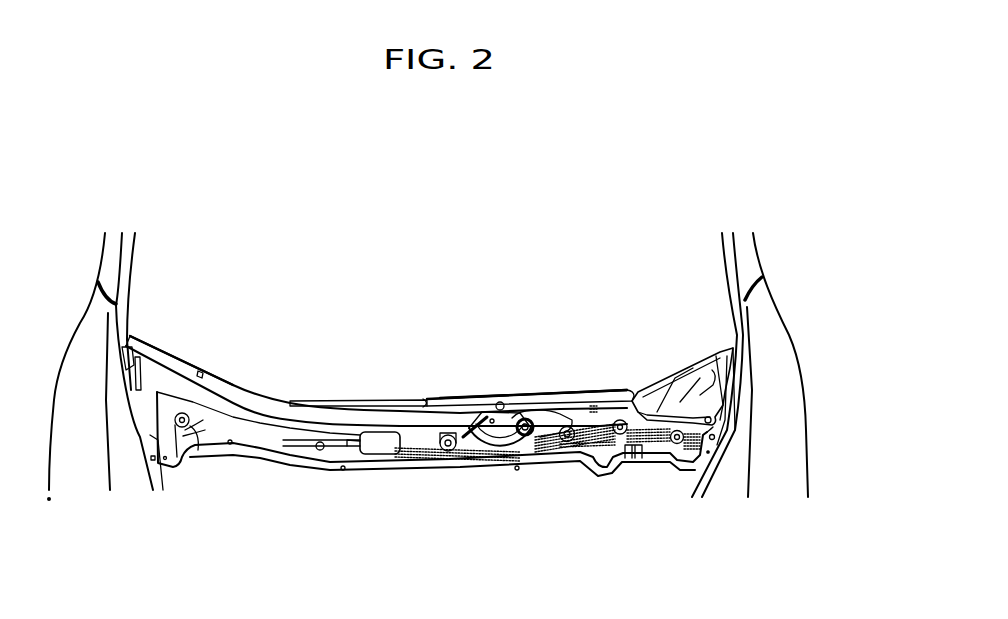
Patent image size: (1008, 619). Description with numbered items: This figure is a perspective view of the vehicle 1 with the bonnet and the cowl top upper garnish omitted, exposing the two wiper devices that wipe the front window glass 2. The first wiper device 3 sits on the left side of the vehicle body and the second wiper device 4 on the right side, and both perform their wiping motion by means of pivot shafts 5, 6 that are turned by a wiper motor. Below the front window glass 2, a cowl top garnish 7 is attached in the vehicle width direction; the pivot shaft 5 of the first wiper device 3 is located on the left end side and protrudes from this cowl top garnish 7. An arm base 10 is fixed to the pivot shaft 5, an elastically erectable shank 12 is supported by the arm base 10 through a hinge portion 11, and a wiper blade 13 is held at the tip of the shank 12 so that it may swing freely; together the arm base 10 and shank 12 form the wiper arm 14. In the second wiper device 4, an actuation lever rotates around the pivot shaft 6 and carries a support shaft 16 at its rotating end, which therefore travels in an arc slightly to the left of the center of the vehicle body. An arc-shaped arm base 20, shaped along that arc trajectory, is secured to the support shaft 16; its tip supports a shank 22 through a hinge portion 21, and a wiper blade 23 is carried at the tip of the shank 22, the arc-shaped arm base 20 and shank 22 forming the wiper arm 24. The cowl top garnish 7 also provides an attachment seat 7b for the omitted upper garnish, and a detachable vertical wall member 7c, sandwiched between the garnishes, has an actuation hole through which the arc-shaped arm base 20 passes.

The vehicle 1 is at (806, 256).
The front window glass 2 is at (447, 304).
The first wiper device 3 is at (577, 376).
The second wiper device 4 is at (233, 376).
The pivot shaft 5 is at (713, 427).
The pivot shaft 6 is at (514, 437).
The cowl top garnish 7 is at (580, 468).
The attachment seat 7b is at (570, 427).
The vertical wall member 7c is at (477, 427).
The arm base 10 is at (716, 378).
The hinge portion 11 is at (638, 388).
The shank 12 is at (490, 396).
The wiper blade 13 is at (332, 400).
The wiper arm 14 is at (666, 387).
The support shaft 16 is at (530, 437).
The arc-shaped arm base 20 is at (490, 432).
The hinge portion 21 is at (406, 442).
The shank 22 is at (298, 433).
The wiper blade 23 is at (172, 356).
The wiper arm 24 is at (402, 473).